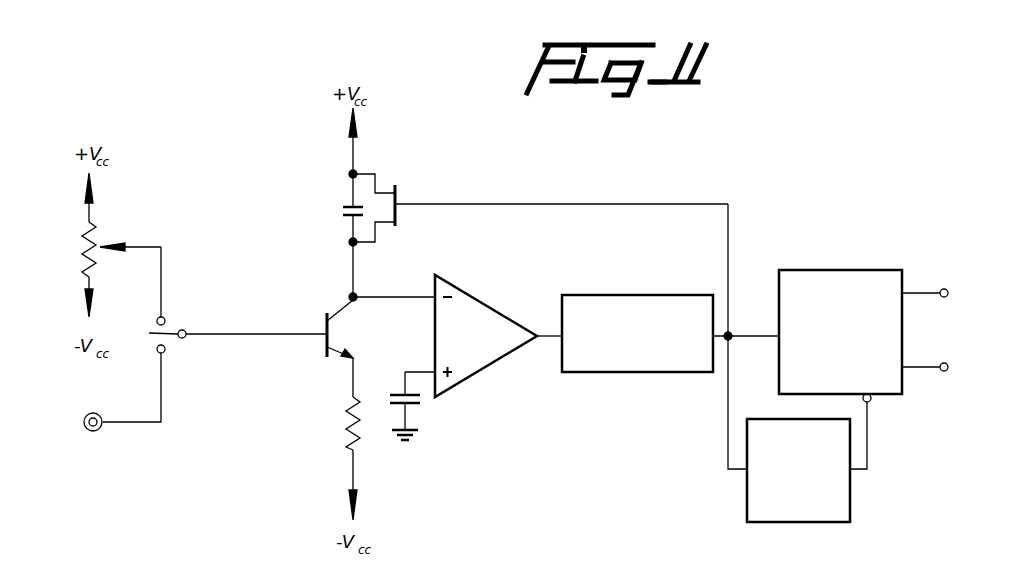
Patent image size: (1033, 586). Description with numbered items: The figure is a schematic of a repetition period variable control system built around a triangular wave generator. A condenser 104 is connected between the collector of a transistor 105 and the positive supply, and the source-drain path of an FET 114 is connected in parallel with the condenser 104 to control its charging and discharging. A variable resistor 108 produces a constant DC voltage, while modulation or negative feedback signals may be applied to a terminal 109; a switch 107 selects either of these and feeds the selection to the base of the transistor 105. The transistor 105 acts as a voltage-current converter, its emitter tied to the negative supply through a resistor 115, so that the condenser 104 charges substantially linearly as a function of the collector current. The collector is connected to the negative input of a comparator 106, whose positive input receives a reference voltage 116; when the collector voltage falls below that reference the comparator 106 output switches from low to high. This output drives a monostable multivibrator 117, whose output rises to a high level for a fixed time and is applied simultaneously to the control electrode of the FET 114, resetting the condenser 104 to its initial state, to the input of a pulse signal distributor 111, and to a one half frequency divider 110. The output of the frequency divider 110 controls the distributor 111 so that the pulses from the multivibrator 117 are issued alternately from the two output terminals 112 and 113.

The condenser 104 is at (340, 210).
The transistor 105 is at (340, 314).
The comparator 106 is at (478, 298).
The switch 107 is at (170, 320).
The variable resistor 108 is at (78, 253).
The terminal 109 is at (98, 431).
The one half frequency divider 110 is at (800, 524).
The pulse signal distributor 111 is at (816, 268).
The output terminal 112 is at (940, 288).
The output terminal 113 is at (943, 372).
The FET 114 is at (400, 201).
The resistor 115 is at (345, 430).
The reference voltage 116 is at (420, 403).
The monostable multivibrator 117 is at (630, 374).